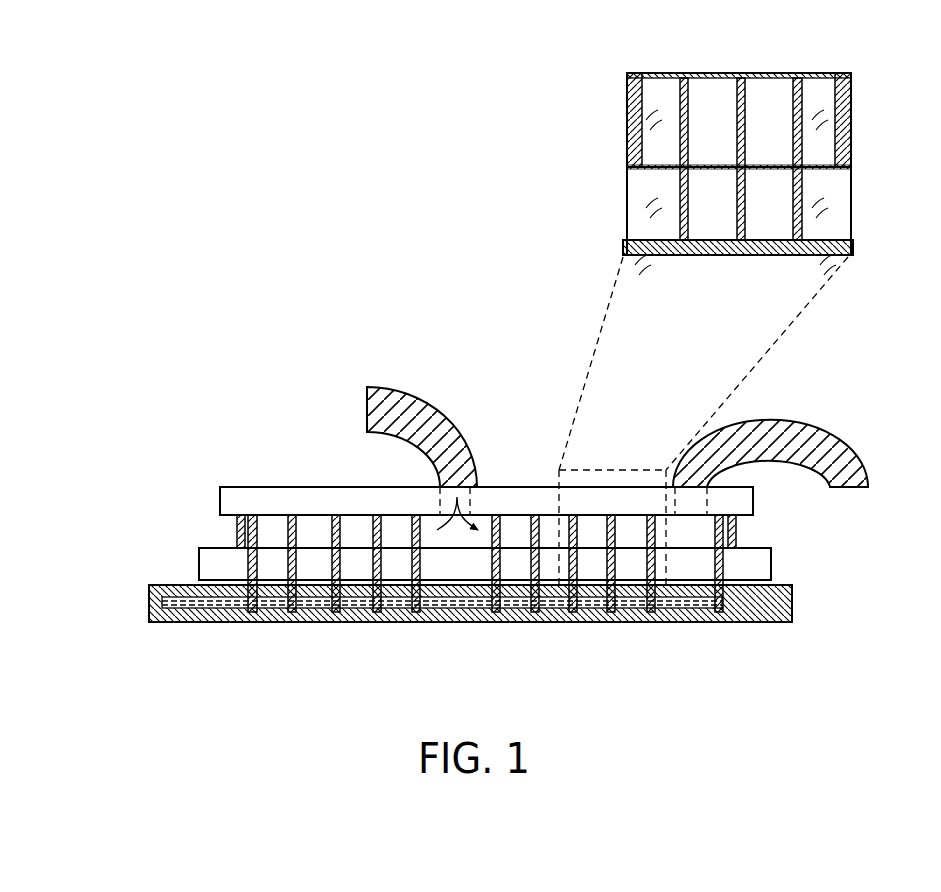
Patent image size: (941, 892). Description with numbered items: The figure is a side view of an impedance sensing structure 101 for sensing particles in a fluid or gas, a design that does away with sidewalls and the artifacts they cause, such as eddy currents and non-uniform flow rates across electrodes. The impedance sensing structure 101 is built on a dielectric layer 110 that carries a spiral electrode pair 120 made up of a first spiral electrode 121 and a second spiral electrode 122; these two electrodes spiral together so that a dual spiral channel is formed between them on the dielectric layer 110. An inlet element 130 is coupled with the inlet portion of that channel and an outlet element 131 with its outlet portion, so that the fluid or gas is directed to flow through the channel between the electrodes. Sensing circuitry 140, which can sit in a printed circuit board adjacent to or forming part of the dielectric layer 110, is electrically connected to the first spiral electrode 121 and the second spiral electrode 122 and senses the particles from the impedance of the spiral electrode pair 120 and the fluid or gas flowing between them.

The impedance sensing structure 101 is at (238, 418).
The dielectric layer 110 is at (199, 566).
The spiral electrode pair 120 is at (533, 597).
The first spiral electrode 121 is at (377, 515).
The second spiral electrode 122 is at (495, 515).
The inlet element 130 is at (403, 405).
The outlet element 131 is at (832, 460).
The sensing circuitry 140 is at (728, 603).